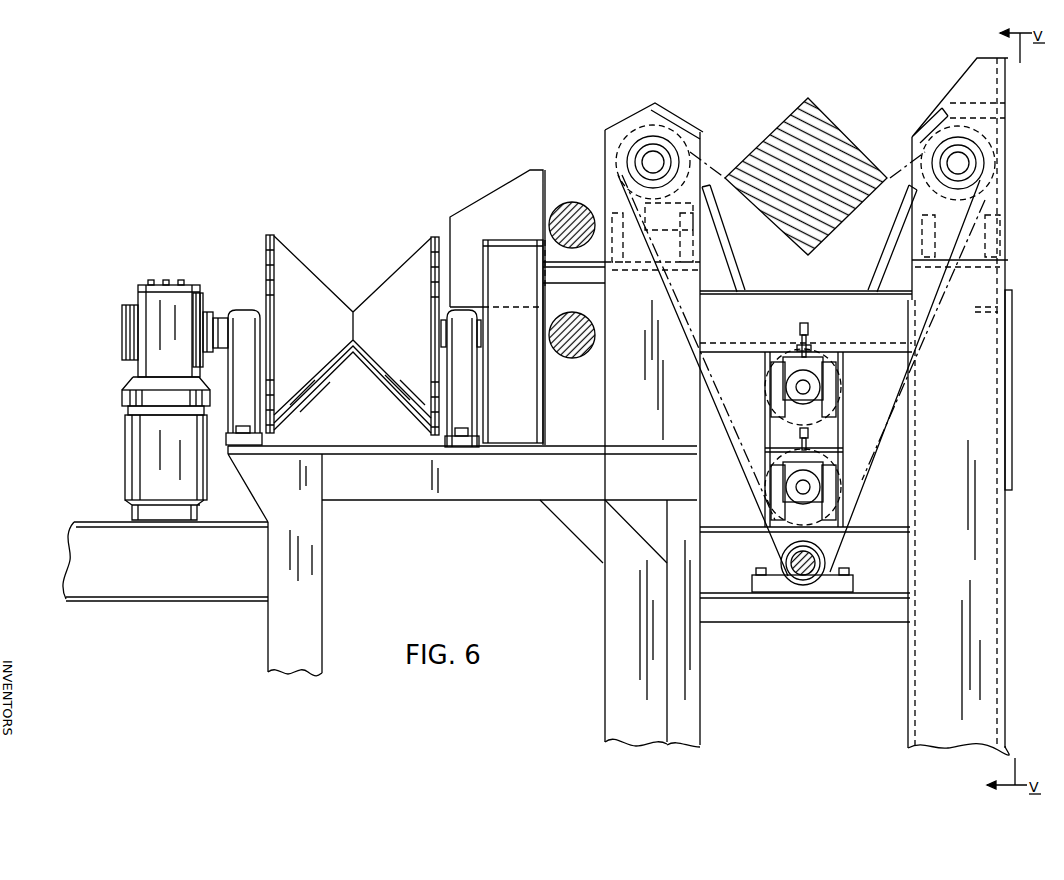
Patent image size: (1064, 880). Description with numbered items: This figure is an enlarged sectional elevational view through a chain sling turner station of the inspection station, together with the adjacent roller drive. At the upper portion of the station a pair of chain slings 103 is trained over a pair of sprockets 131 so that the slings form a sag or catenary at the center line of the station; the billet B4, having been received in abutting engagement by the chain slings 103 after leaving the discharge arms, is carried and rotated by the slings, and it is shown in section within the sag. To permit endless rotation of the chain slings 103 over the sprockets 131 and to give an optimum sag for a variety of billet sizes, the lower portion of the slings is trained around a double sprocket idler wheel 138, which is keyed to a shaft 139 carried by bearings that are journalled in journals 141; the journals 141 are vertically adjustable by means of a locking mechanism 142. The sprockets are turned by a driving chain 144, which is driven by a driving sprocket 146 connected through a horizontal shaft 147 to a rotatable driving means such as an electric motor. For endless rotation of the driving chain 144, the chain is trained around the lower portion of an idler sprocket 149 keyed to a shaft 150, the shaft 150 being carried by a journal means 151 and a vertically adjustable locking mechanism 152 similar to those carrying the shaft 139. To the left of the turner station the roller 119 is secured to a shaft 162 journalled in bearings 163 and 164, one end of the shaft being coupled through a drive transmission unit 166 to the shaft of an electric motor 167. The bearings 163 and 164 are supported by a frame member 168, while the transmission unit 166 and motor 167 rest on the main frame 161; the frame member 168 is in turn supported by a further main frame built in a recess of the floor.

The chain slings 103 is at (897, 143).
The roller 119 is at (400, 271).
The sprockets 131 is at (646, 130).
The double sprocket idler wheel 138 is at (830, 494).
The shaft 139 is at (800, 490).
The journals 141 is at (787, 481).
The locking mechanism 142 is at (782, 440).
The driving chain 144 is at (862, 333).
The driving sprocket 146 is at (828, 564).
The horizontal shaft 147 is at (805, 573).
The idler sprocket 149 is at (780, 347).
The shaft 150 is at (808, 388).
The journal means 151 is at (822, 365).
The locking mechanism 152 is at (806, 331).
The main frame 161 is at (194, 578).
The shaft 162 is at (217, 318).
The bearing 163 is at (463, 310).
The bearing 164 is at (241, 310).
The drive transmission unit 166 is at (150, 305).
The electric motor 167 is at (130, 455).
The frame member 168 is at (476, 486).
The billet B4 is at (760, 147).